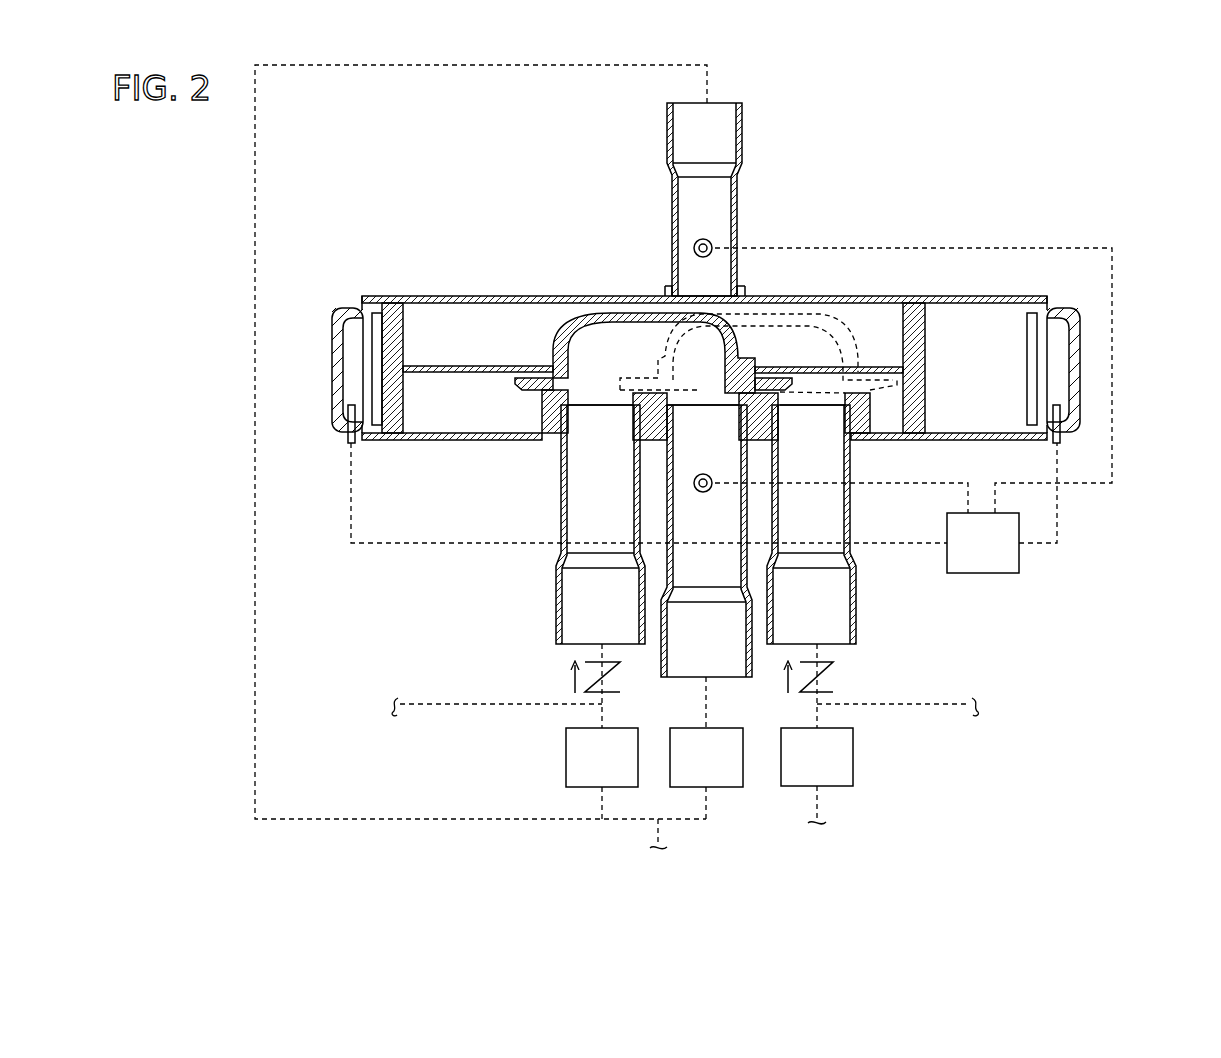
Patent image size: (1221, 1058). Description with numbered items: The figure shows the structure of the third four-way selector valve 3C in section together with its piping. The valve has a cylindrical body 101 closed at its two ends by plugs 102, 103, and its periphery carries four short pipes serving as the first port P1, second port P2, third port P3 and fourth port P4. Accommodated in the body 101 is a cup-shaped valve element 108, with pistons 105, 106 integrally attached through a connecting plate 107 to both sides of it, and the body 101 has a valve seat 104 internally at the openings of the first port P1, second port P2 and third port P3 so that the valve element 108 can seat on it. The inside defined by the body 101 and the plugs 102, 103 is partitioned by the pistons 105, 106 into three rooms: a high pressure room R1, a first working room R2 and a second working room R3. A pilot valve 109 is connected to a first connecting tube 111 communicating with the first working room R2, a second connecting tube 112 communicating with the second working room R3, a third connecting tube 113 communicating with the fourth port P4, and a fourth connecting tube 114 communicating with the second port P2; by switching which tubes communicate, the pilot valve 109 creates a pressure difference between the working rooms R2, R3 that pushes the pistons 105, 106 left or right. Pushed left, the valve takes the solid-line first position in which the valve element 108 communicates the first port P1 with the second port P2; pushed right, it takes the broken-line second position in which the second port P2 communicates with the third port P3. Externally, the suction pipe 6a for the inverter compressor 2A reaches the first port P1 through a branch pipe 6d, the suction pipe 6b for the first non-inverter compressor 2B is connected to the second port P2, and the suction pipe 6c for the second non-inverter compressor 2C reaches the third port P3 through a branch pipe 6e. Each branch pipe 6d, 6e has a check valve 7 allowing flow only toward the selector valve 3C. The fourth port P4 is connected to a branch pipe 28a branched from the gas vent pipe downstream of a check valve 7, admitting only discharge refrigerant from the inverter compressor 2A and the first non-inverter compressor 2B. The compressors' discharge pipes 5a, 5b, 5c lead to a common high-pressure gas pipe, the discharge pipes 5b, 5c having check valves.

The third four-way selector valve 3C is at (950, 140).
The body 101 is at (975, 296).
The plug 102 is at (350, 305).
The plug 103 is at (1055, 308).
The valve seat 104 is at (542, 415).
The piston 105 is at (392, 303).
The piston 106 is at (914, 303).
The connecting plate 107 is at (510, 366).
The valve element 108 is at (580, 330).
The pilot valve 109 is at (1019, 563).
The first connecting tube 111 is at (375, 545).
The second connecting tube 112 is at (1060, 525).
The third connecting tube 113 is at (1114, 437).
The fourth connecting tube 114 is at (880, 495).
The high pressure room R1 is at (840, 310).
The first working room R2 is at (353, 337).
The second working room R3 is at (1000, 350).
The first port P1 is at (577, 525).
The second port P2 is at (690, 576).
The third port P3 is at (833, 597).
The fourth port P4 is at (728, 190).
The branch pipe 28a is at (430, 78).
The suction pipe 6a is at (420, 704).
The suction pipe 6b is at (706, 716).
The suction pipe 6c is at (970, 704).
The branch pipe 6d is at (602, 652).
The branch pipe 6e is at (817, 652).
The check valve 7 is at (620, 668).
The inverter compressor 2A is at (566, 757).
The first non-inverter compressor 2B is at (735, 787).
The second non-inverter compressor 2C is at (853, 757).
The discharge pipe 5a is at (602, 803).
The discharge pipe 5b is at (706, 800).
The discharge pipe 5c is at (817, 800).